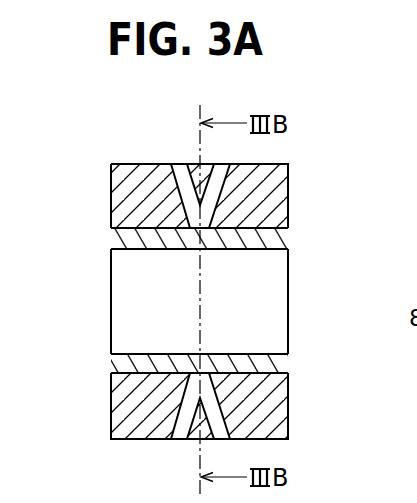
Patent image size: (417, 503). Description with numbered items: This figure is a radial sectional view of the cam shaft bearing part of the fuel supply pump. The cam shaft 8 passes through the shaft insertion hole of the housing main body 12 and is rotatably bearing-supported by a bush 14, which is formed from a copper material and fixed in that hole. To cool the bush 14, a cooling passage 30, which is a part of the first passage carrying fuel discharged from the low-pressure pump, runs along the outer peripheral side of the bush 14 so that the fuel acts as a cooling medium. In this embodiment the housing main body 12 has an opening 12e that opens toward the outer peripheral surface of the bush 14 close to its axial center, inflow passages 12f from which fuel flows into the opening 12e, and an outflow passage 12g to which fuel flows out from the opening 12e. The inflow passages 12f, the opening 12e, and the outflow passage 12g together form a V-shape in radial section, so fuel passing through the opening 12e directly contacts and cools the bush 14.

The cam shaft 8 is at (125, 310).
The housing main body 12 is at (273, 215).
The opening 12e is at (186, 215).
The inflow passages 12f is at (176, 178).
The outflow passage 12g is at (232, 173).
The bush 14 is at (270, 240).
The cooling passage 30 is at (217, 205).